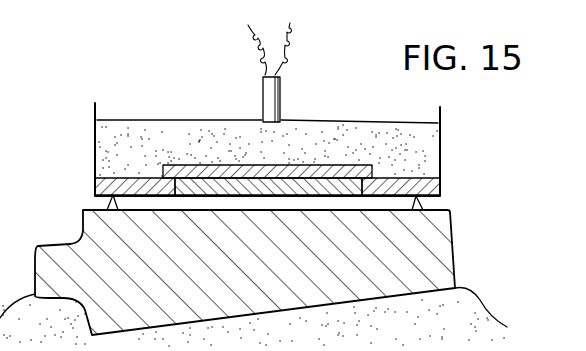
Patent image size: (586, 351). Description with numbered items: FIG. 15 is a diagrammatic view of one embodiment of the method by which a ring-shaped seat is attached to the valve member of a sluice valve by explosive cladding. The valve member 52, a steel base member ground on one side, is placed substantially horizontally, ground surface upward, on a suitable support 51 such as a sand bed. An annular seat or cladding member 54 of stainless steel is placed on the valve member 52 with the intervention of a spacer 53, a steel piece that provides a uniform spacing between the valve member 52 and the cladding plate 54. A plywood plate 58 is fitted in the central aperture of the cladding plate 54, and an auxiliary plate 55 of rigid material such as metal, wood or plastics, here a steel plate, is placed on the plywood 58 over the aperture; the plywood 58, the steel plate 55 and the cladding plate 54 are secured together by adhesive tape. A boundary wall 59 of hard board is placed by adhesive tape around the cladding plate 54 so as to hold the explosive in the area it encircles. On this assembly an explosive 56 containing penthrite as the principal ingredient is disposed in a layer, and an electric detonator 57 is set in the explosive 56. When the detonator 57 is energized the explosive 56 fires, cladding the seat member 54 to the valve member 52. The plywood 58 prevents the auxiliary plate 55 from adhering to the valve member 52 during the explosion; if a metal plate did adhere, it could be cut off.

The support 51 is at (467, 303).
The valve member 52 is at (440, 248).
The spacer 53 is at (427, 204).
The annular seat member 54 is at (433, 178).
The auxiliary plate 55 is at (357, 166).
The explosive 56 is at (313, 137).
The electric detonator 57 is at (262, 97).
The plywood plate 58 is at (230, 190).
The boundary wall 59 is at (94, 112).